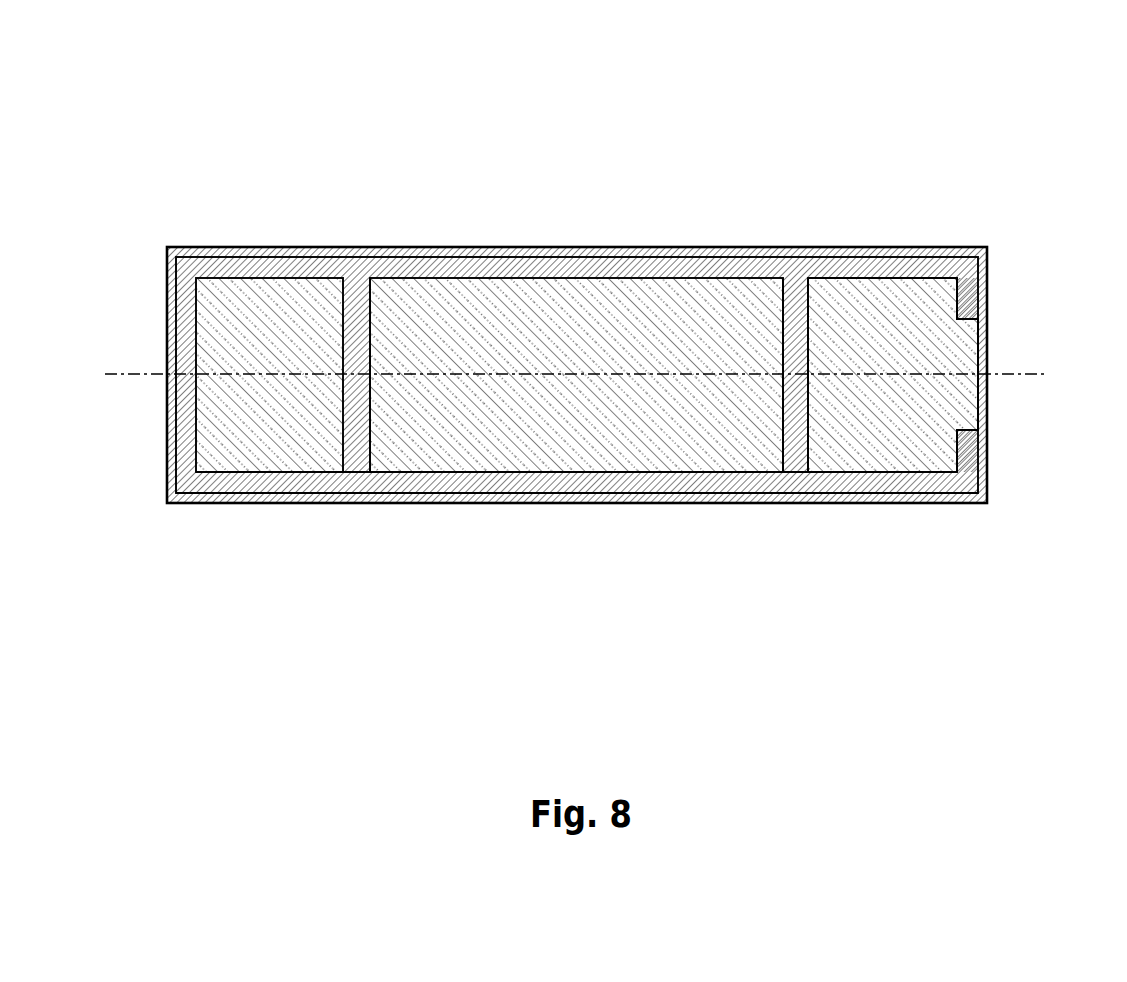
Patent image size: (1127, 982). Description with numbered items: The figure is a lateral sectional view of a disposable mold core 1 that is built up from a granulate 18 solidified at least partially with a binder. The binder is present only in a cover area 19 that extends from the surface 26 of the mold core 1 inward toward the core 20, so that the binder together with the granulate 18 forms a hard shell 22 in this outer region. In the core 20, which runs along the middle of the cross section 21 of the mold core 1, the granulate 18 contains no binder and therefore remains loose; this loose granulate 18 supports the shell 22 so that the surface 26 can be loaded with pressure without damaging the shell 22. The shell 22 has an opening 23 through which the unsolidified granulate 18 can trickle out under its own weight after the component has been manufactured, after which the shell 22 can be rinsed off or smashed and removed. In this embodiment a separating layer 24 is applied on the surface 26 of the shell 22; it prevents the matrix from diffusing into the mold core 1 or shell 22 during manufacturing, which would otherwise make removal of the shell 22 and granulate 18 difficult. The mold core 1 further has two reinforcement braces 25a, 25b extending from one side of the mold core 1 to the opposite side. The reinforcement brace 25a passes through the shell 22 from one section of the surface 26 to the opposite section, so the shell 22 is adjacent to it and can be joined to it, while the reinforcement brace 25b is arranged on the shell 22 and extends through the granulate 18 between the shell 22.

The mold core 1 is at (272, 142).
The granulate 18 is at (488, 448).
The cover area 19 is at (997, 470).
The core 20 is at (997, 360).
The cross section 21 is at (120, 373).
The shell 22 is at (682, 480).
The opening 23 is at (963, 393).
The separating layer 24 is at (465, 253).
The reinforcement brace 25a is at (352, 312).
The reinforcement brace 25b is at (788, 320).
The surface 26 is at (559, 257).